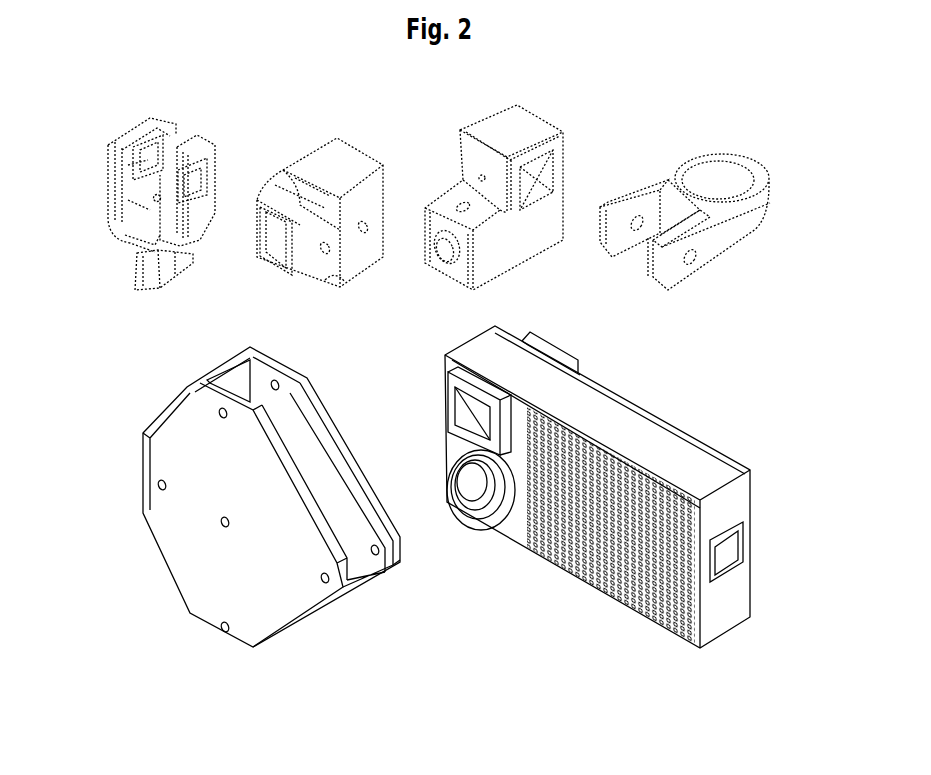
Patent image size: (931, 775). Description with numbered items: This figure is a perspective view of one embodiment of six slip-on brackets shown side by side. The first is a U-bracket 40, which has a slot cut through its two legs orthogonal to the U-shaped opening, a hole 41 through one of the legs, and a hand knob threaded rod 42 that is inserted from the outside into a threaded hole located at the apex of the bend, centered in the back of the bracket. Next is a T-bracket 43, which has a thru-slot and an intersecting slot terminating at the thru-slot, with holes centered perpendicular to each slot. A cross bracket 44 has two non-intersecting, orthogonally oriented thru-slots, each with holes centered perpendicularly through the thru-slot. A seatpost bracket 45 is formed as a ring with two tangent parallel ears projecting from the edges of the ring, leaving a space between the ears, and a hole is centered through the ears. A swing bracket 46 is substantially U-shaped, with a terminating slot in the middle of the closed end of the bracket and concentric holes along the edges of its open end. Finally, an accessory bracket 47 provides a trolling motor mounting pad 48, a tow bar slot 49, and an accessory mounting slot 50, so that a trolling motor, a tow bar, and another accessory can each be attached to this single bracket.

The U-bracket 40 is at (140, 127).
The hole 41 is at (153, 197).
The hand knob threaded rod 42 is at (135, 269).
The T-bracket 43 is at (318, 155).
The cross bracket 44 is at (482, 130).
The seatpost bracket 45 is at (673, 170).
The swing bracket 46 is at (165, 417).
The accessory bracket 47 is at (675, 422).
The trolling motor mounting pad 48 is at (585, 580).
The tow bar slot 49 is at (473, 520).
The accessory mounting slot 50 is at (453, 406).